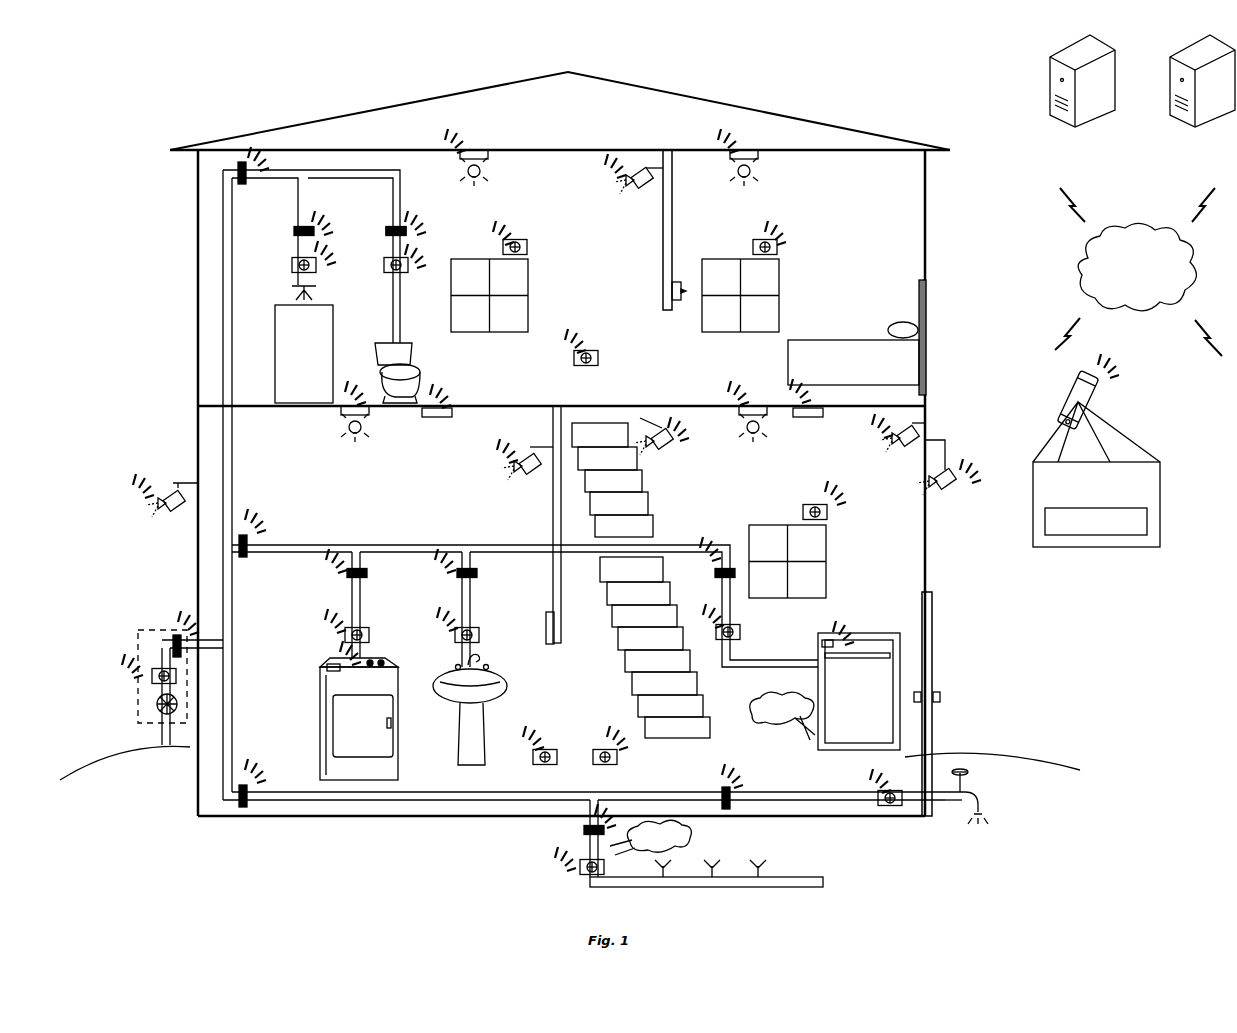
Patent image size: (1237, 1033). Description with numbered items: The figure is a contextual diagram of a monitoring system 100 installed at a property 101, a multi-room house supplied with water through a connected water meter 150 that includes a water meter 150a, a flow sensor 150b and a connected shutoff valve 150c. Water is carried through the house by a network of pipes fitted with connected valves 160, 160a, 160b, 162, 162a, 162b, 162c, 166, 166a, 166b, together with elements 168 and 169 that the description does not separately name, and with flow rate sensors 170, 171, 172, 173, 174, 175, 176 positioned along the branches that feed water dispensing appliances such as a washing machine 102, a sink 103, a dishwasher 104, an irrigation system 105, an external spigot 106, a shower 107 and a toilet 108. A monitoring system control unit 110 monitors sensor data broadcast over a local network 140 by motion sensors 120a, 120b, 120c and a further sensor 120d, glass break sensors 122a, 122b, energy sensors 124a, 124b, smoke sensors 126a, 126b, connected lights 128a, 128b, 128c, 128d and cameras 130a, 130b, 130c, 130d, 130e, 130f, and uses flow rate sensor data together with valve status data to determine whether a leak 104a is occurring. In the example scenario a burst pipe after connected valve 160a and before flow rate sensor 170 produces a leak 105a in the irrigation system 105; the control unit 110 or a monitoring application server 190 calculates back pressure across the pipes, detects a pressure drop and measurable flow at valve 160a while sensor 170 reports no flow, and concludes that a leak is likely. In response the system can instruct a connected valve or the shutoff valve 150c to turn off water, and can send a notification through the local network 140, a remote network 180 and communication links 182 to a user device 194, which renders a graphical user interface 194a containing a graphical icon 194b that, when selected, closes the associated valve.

The monitoring system 100 is at (428, 87).
The property 101 is at (818, 130).
The washing machine 102 is at (395, 738).
The sink 103 is at (445, 695).
The dishwasher 104 is at (832, 635).
The leak 104a is at (760, 712).
The irrigation system 105 is at (680, 888).
The leak 105a is at (690, 838).
The external spigot 106 is at (985, 782).
The shower 107 is at (322, 358).
The toilet 108 is at (412, 360).
The monitoring system control unit 110 is at (548, 635).
The motion sensor 120a is at (533, 762).
The motion sensor 120b is at (617, 760).
The motion sensor 120c is at (600, 360).
The sensor 120d is at (780, 250).
The glass break sensor 122a is at (828, 515).
The glass break sensor 122b is at (528, 250).
The energy sensor 124a is at (325, 666).
The energy sensor 124b is at (822, 643).
The smoke sensor 126a is at (823, 408).
The smoke sensor 126b is at (430, 417).
The connected light 128a is at (768, 418).
The connected light 128b is at (758, 158).
The connected light 128c is at (488, 158).
The connected light 128d is at (345, 425).
The camera 130a is at (655, 443).
The camera 130b is at (918, 438).
The camera 130c is at (940, 490).
The camera 130d is at (648, 182).
The camera 130e is at (540, 462).
The camera 130f is at (180, 512).
The local network 140 is at (262, 145).
The connected water meter 150 is at (100, 690).
The water meter 150a is at (172, 630).
The flow sensor 150b is at (152, 682).
The connected shutoff valve 150c is at (157, 710).
The connected valve 160 is at (243, 836).
The connected valve 160a is at (585, 830).
The connected valve 160b is at (722, 790).
The connected valve 162 is at (236, 555).
The connected valve 162a is at (368, 568).
The connected valve 162b is at (478, 568).
The connected valve 162c is at (735, 578).
The connected valve 166 is at (238, 170).
The connected valve 166a is at (300, 231).
The connected valve 166b is at (392, 231).
The riser pipe 168 is at (250, 228).
The valve 169 is at (404, 231).
The flow rate sensor 170 is at (580, 872).
The flow rate sensor 171 is at (905, 808).
The flow rate sensor 172 is at (365, 630).
The flow rate sensor 173 is at (480, 636).
The flow rate sensor 174 is at (720, 645).
The flow rate sensor 175 is at (292, 268).
The flow rate sensor 176 is at (384, 268).
The remote network 180 is at (1088, 265).
The communication link 182 is at (1068, 195).
The monitoring application server 190 is at (1052, 77).
The user device 194 is at (1068, 378).
The graphical user interface 194a is at (1033, 508).
The graphical icon 194b is at (1145, 535).